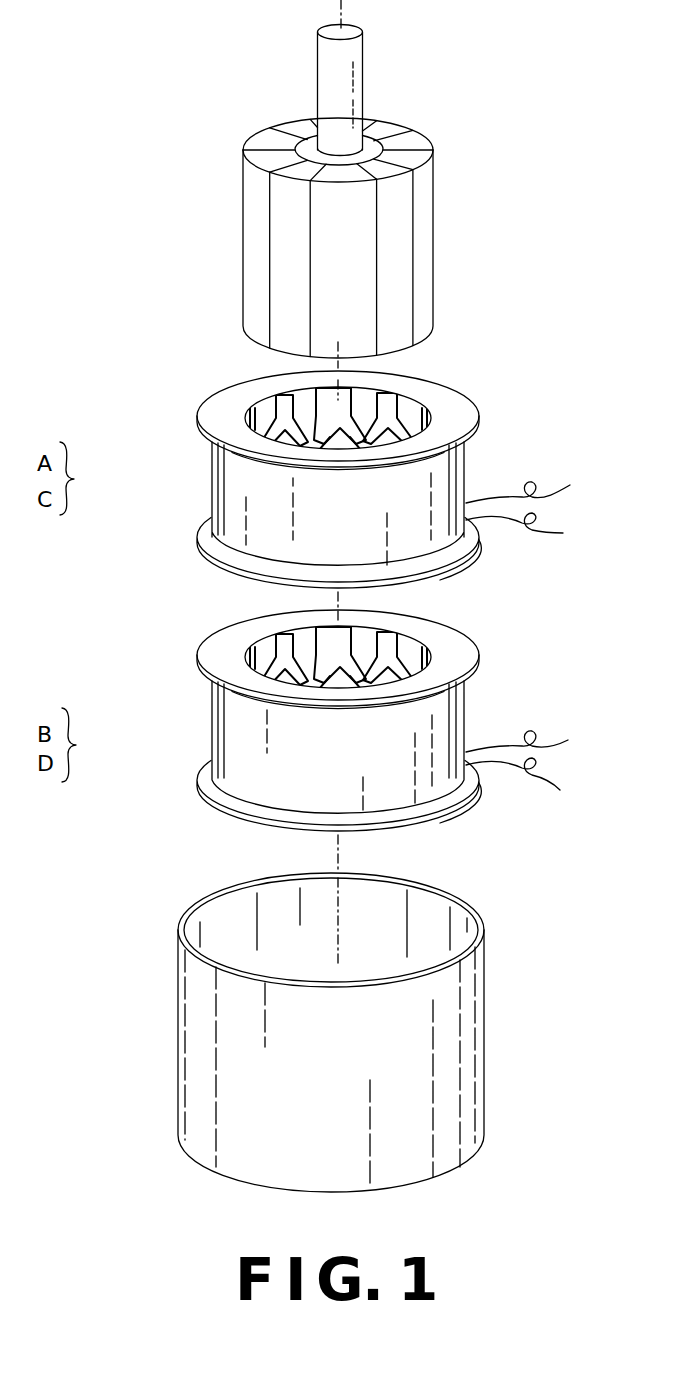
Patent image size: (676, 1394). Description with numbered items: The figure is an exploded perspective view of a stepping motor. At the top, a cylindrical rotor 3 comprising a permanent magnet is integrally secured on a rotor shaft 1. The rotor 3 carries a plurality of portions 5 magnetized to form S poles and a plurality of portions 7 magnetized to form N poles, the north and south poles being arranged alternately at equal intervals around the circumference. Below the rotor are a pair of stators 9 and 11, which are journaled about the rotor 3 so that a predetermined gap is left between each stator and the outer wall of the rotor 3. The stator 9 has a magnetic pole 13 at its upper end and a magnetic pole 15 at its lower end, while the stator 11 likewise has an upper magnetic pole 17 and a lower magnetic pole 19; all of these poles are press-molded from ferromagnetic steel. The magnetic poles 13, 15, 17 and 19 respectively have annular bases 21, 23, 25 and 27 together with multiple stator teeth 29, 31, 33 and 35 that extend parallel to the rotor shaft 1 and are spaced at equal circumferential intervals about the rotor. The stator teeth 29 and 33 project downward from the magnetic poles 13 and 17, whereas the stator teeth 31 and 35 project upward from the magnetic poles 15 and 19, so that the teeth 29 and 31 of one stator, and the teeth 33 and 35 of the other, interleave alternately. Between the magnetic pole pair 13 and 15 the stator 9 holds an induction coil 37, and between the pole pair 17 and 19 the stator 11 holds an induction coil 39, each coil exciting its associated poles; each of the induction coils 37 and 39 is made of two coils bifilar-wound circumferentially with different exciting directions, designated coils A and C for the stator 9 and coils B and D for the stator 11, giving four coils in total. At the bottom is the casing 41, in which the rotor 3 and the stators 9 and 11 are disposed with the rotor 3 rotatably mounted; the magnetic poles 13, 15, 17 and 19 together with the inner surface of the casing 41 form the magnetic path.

The rotor shaft 1 is at (347, 64).
The rotor 3 is at (421, 226).
The portions magnetized to form S poles 5 is at (257, 198).
The portions magnetized to form N poles 7 is at (288, 245).
The stator 9 is at (470, 450).
The stator 11 is at (448, 722).
The magnetic pole 13 is at (212, 410).
The magnetic pole 15 is at (200, 534).
The magnetic pole 17 is at (212, 652).
The magnetic pole 19 is at (200, 786).
The annular base 21 is at (448, 408).
The annular base 23 is at (476, 548).
The annular base 25 is at (450, 648).
The annular base 27 is at (443, 803).
The stator teeth 29 is at (300, 398).
The stator teeth 31 is at (342, 446).
The stator teeth 33 is at (285, 643).
The stator teeth 35 is at (355, 690).
The induction coil 37 is at (216, 474).
The induction coil 39 is at (226, 727).
The casing 41 is at (447, 1098).